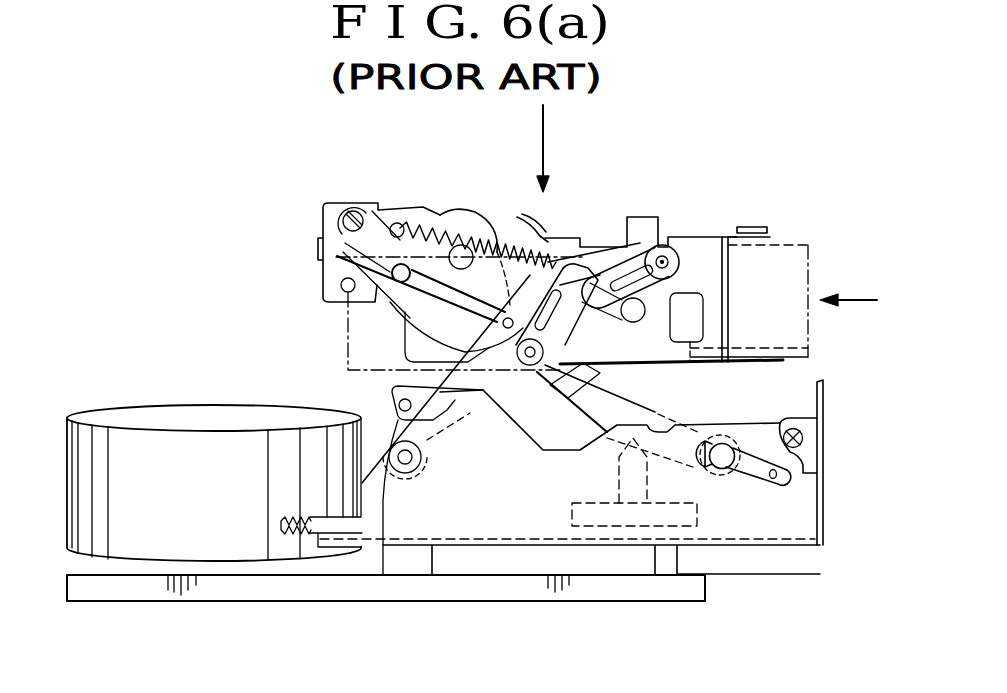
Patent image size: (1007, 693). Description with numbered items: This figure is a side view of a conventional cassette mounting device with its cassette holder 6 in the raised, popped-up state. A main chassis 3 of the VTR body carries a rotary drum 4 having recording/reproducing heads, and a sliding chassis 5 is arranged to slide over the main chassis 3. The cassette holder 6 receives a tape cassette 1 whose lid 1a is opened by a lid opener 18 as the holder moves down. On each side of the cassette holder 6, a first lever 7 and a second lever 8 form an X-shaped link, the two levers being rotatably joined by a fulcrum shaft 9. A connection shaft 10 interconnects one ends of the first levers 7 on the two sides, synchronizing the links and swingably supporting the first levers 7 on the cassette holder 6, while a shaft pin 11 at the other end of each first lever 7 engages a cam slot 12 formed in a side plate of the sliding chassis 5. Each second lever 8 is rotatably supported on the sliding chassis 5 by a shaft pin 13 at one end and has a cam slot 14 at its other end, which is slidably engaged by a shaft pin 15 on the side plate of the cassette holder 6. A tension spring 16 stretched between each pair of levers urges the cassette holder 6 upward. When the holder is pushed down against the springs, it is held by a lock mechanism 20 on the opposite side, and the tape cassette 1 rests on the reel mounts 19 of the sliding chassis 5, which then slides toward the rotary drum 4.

The tape cassette 1 is at (785, 255).
The lid 1a is at (345, 347).
The main chassis 3 is at (216, 590).
The rotary drum 4 is at (158, 418).
The sliding chassis 5 is at (580, 487).
The cassette holder 6 is at (708, 270).
The first lever 7 is at (410, 300).
The second lever 8 is at (598, 260).
The fulcrum shaft 9 is at (622, 392).
The connection shaft 10 is at (355, 208).
The shaft pin 11 is at (723, 470).
The cam slot 12 is at (787, 480).
The shaft pin 13 is at (390, 545).
The cam slot 14 is at (625, 275).
The shaft pin 15 is at (668, 260).
The tension spring 16 is at (449, 216).
The lid opener 18 is at (403, 388).
The reel mounts 19 is at (687, 517).
The lock mechanism 20 is at (808, 348).